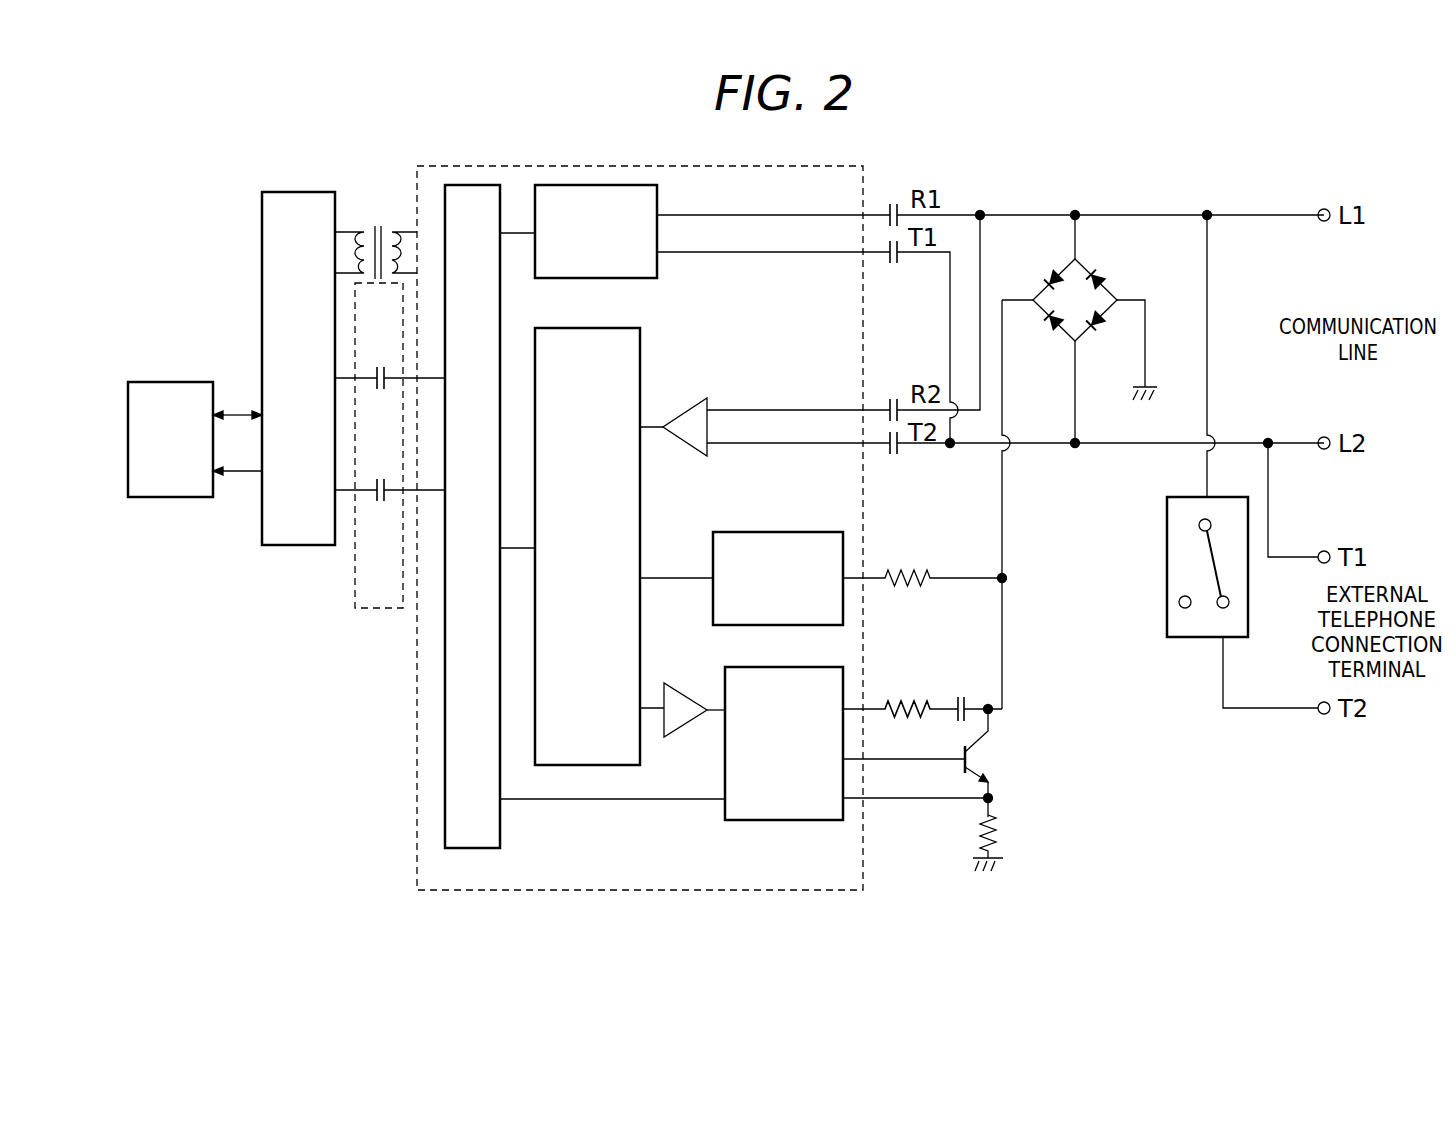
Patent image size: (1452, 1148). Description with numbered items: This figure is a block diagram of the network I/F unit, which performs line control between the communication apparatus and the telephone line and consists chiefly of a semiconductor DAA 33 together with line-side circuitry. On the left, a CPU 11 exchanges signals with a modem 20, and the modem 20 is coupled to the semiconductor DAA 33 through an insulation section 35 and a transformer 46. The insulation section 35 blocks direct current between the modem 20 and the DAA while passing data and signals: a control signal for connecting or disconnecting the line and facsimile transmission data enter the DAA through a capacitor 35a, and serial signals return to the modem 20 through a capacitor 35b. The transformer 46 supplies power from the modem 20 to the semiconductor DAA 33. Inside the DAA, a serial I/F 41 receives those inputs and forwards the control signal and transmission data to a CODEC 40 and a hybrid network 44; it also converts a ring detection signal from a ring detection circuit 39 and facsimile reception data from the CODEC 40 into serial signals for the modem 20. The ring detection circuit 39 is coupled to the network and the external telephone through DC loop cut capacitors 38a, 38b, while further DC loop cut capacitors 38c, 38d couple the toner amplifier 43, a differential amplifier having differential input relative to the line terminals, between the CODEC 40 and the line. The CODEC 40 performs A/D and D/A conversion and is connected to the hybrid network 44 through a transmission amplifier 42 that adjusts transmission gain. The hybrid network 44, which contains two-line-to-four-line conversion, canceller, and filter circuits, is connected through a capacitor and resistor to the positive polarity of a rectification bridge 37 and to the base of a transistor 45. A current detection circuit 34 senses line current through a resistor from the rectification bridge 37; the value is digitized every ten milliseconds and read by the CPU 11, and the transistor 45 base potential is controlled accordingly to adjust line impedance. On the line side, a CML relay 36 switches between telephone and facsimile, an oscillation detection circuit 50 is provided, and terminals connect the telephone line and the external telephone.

The CPU 11 is at (175, 497).
The modem 20 is at (293, 190).
The semiconductor DAA 33 is at (585, 890).
The current detection circuit 34 is at (780, 532).
The insulation section 35 is at (390, 479).
The capacitor 35a is at (380, 368).
The capacitor 35b is at (380, 500).
The CML relay 36 is at (1167, 575).
The rectification bridge 37 is at (1120, 290).
The DC loop cut capacitor 38a is at (893, 205).
The DC loop cut capacitor 38b is at (895, 265).
The DC loop cut capacitor 38c is at (893, 398).
The DC loop cut capacitor 38d is at (895, 455).
The ring detection circuit 39 is at (657, 272).
The CODEC 40 is at (640, 500).
The serial I/F 41 is at (500, 822).
The transmission amplifier 42 is at (690, 682).
The toner amplifier 43 is at (683, 400).
The hybrid network 44 is at (780, 820).
The transistor 45 is at (990, 762).
The transformer 46 is at (376, 228).
The oscillation detection circuit 50 is at (1042, 177).